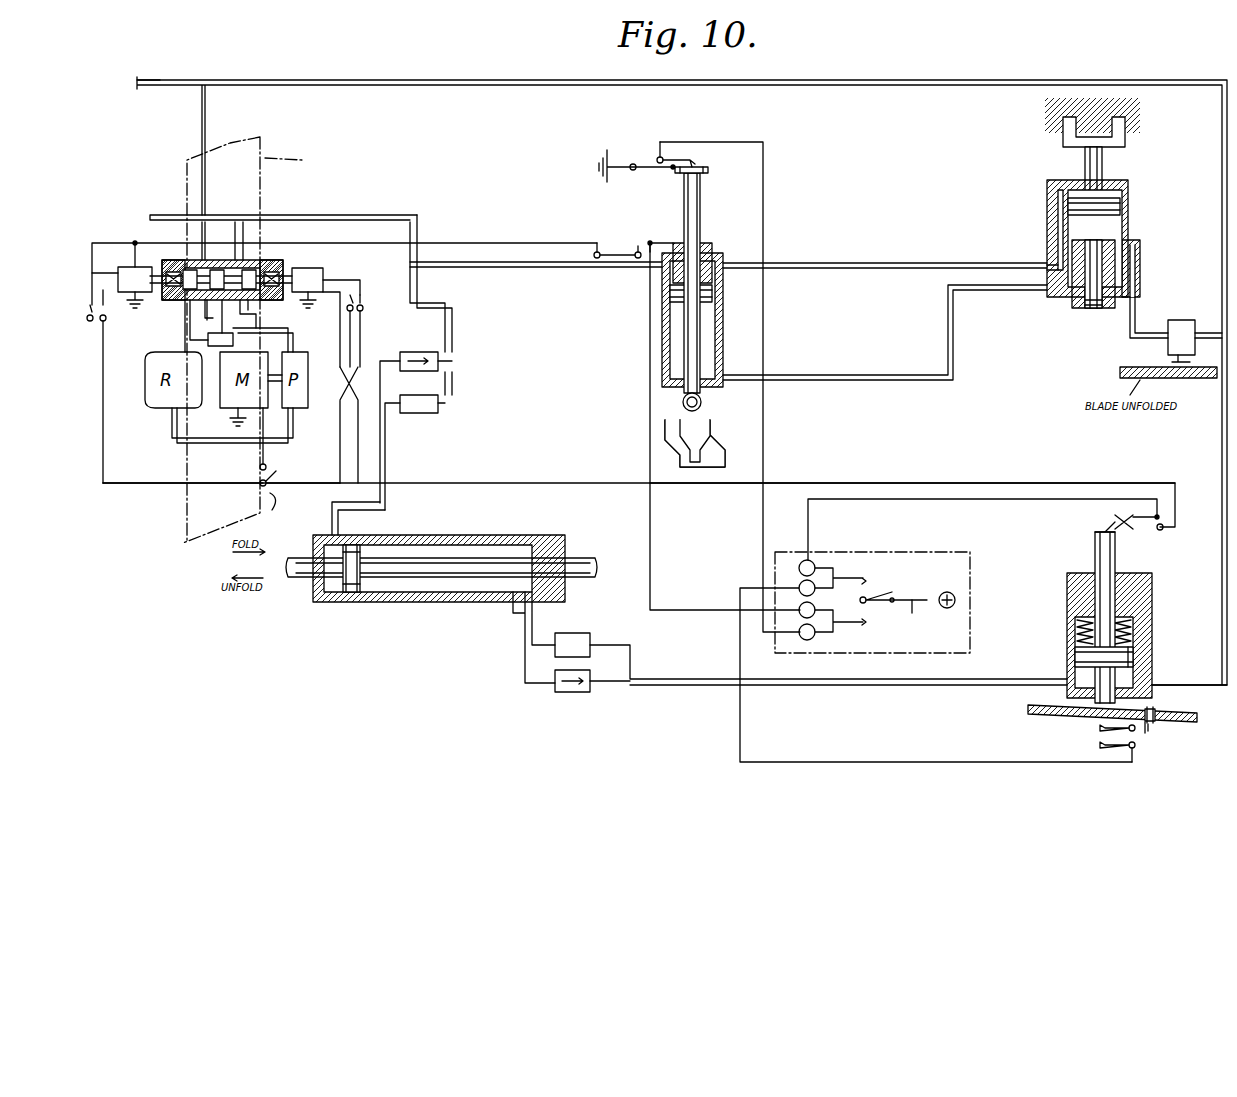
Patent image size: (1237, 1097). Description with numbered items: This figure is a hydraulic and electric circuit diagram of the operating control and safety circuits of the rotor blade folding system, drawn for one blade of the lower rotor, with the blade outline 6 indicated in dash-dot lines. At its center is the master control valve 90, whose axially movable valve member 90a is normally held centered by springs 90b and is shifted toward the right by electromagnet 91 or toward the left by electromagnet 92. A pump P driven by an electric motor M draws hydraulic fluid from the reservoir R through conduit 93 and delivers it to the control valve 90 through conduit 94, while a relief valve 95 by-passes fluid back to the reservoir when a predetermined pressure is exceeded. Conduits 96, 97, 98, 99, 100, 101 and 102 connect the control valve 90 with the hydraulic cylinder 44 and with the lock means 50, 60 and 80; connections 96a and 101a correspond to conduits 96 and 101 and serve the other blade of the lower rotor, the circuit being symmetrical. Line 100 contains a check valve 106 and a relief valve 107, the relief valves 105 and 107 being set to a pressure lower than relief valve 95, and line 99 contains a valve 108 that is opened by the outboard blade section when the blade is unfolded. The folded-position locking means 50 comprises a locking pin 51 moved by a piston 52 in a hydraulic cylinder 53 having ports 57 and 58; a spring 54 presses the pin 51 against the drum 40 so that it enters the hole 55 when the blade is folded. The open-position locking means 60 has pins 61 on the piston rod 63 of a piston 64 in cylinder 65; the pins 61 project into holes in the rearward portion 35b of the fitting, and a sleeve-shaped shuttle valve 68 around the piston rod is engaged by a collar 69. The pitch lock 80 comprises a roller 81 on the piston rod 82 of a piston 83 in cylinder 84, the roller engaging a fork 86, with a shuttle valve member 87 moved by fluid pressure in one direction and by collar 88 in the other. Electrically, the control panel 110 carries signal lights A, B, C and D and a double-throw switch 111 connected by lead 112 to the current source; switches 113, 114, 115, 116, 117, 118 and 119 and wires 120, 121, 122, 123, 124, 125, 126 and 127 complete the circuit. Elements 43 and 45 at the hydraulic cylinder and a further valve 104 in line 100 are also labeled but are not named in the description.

The rotor blade (dash-dot outline) 6 is at (252, 340).
The rearward portion of the fitting 35b is at (1045, 108).
The drum 40 is at (1040, 715).
The hydraulic cylinder 43 is at (445, 592).
The hydraulic cylinder 44 is at (447, 535).
The piston 45 is at (350, 592).
The locking means 50 is at (1099, 634).
The locking pin 51 is at (1090, 712).
The piston 52 is at (1075, 655).
The hydraulic cylinder 53 is at (1152, 612).
The spring 54 is at (1133, 633).
The hole 55 is at (1155, 718).
The port 57 is at (1152, 683).
The port 58 is at (1067, 688).
The locking means 60 is at (1072, 218).
The pins 61 is at (1068, 130).
The piston rod 63 is at (1085, 160).
The piston 64 is at (1128, 206).
The cylinder 65 is at (1050, 196).
The shuttle valve 68 is at (1072, 300).
The collar 69 is at (1092, 308).
The pitch lock 80 is at (678, 289).
The roller 81 is at (702, 403).
The piston rod 82 is at (700, 355).
The piston 83 is at (712, 293).
The cylinder 84 is at (723, 325).
The fork 86 is at (723, 450).
The shuttle valve member 87 is at (710, 247).
The collar 88 is at (706, 173).
The master control valve 90 is at (269, 233).
The valve member 90a is at (236, 283).
The springs 90b is at (170, 262).
The electromagnet 91 is at (133, 235).
The electromagnet 92 is at (326, 317).
The conduit 93 is at (172, 425).
The conduit 94 is at (296, 340).
The relief valve 95 is at (233, 340).
The conduit 96 is at (417, 218).
The connection 96a is at (158, 200).
The conduit 97 is at (838, 263).
The conduit 98 is at (838, 375).
The line 99 is at (1128, 330).
The line 100 is at (455, 308).
The conduit 101 is at (292, 86).
The connection 101a is at (163, 86).
The conduit 102 is at (870, 685).
The check valve 104 is at (420, 352).
The relief valve 105 is at (406, 413).
The check valve 106 is at (600, 705).
The relief valve 107 is at (570, 633).
The valve 108 is at (1198, 320).
The control panel 110 is at (878, 593).
The double-throw switch 111 is at (880, 596).
The lead 112 is at (926, 615).
The switch 113 is at (1118, 515).
The switch 114 is at (363, 300).
The switch 115 is at (1103, 749).
The switch 116 is at (645, 240).
The switch 117 is at (94, 378).
The switch 118 is at (695, 160).
The switch 119 is at (281, 460).
The wire 120 is at (925, 499).
The wire 121 is at (880, 483).
The wire 122 is at (292, 483).
The wire 123 is at (895, 762).
The wire 124 is at (651, 540).
The wire 125 is at (477, 243).
The wire 126 is at (200, 483).
The wire 127 is at (763, 228).